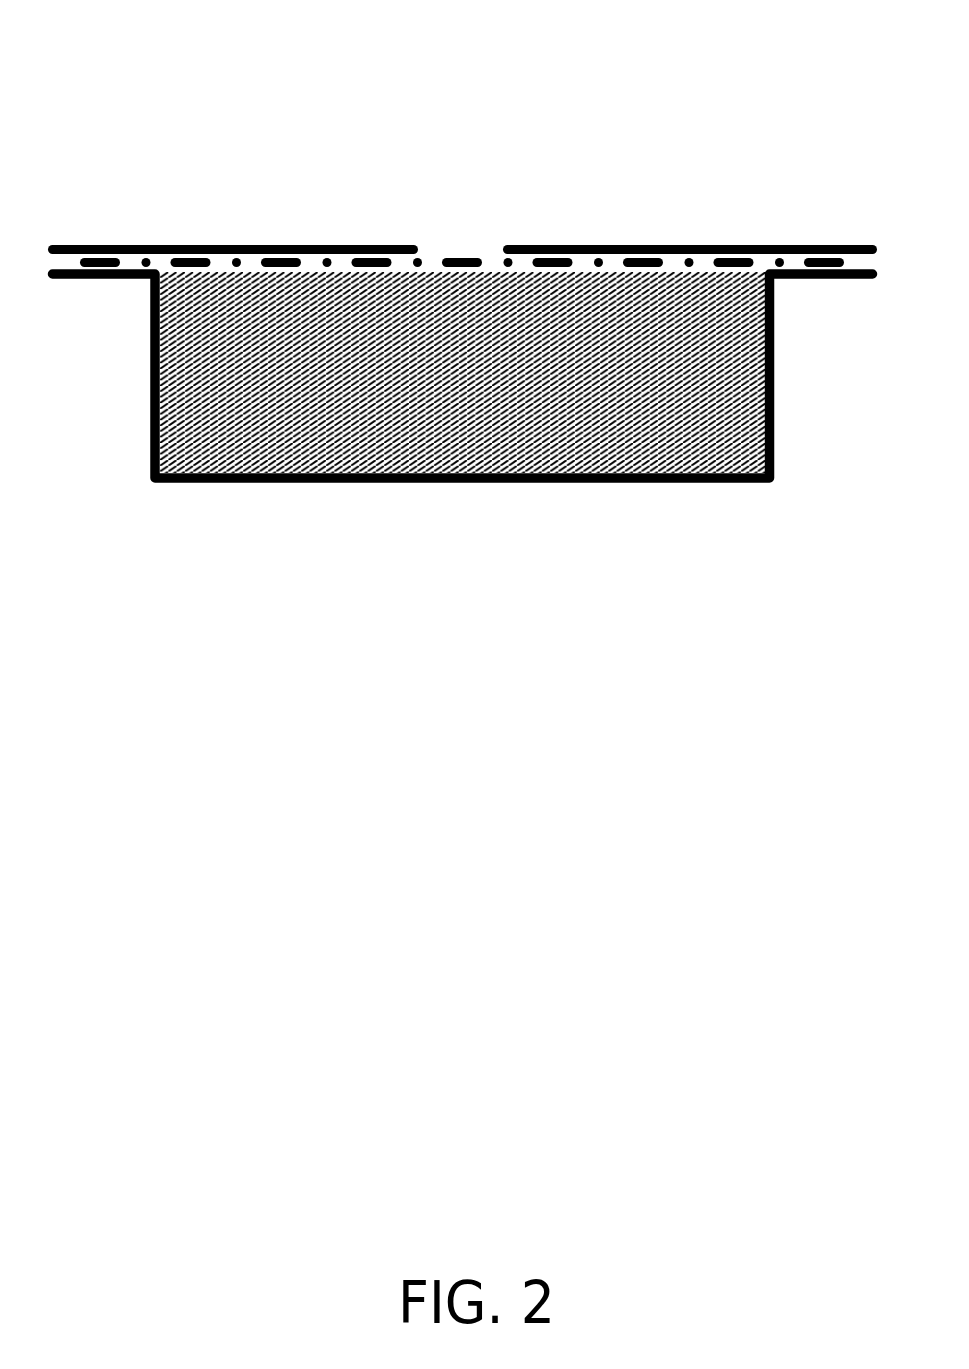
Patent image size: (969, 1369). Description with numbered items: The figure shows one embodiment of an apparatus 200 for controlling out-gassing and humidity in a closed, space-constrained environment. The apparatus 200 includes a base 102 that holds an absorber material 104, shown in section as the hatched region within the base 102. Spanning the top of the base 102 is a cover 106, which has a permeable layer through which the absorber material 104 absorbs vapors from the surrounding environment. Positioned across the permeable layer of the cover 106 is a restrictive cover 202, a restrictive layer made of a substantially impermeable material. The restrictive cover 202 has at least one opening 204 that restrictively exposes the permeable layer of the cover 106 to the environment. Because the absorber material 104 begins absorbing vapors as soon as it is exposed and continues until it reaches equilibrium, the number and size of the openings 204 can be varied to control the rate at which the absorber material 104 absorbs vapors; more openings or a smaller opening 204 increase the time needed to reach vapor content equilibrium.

The apparatus 200 is at (135, 109).
The base 102 is at (150, 388).
The absorber material 104 is at (312, 453).
The cover 106 is at (287, 258).
The restrictive cover 202 is at (602, 245).
The opening 204 is at (467, 250).